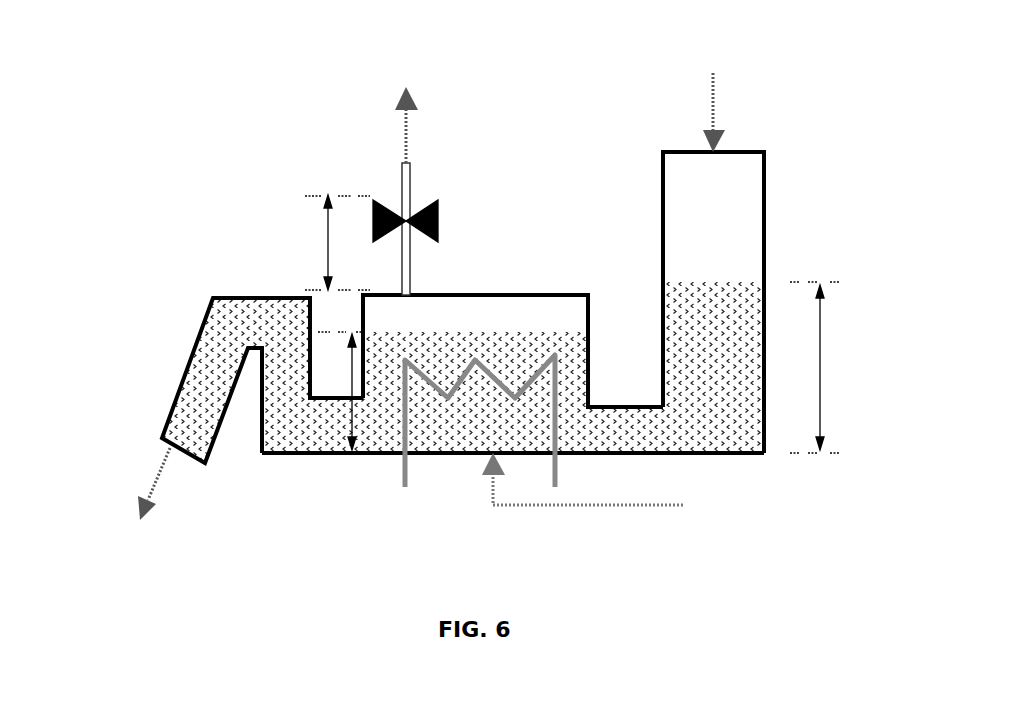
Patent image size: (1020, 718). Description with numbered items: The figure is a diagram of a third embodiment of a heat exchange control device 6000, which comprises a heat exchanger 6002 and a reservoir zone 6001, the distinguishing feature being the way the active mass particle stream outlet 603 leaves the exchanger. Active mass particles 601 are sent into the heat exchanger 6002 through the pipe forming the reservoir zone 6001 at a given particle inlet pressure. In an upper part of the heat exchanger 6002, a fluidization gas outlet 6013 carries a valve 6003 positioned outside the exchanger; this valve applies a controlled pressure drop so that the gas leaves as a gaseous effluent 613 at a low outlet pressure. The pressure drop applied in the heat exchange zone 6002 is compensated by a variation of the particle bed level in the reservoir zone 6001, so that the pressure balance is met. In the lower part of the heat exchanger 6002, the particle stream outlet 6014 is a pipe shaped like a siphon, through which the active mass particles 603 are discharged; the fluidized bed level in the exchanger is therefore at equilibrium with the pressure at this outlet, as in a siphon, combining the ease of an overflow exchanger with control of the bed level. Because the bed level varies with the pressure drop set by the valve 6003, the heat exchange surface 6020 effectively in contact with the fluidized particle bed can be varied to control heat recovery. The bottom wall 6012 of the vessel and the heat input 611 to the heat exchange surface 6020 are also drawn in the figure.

The heat exchange control device 6000 is at (466, 303).
The reservoir zone 6001 is at (765, 218).
The heat exchanger 6002 is at (533, 295).
The valve 6003 is at (430, 205).
The bottom wall 6012 is at (648, 455).
The fluidization gas outlet 6013 is at (411, 273).
The particle stream outlet 6014 is at (205, 310).
The heat exchange surface 6020 is at (422, 423).
The active mass particles 601 is at (713, 95).
The active mass particle stream outlet 603 is at (148, 483).
The heat input 611 is at (570, 505).
The gaseous effluent 613 is at (405, 127).